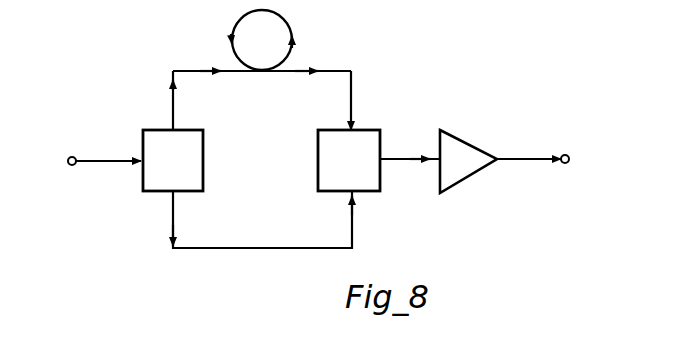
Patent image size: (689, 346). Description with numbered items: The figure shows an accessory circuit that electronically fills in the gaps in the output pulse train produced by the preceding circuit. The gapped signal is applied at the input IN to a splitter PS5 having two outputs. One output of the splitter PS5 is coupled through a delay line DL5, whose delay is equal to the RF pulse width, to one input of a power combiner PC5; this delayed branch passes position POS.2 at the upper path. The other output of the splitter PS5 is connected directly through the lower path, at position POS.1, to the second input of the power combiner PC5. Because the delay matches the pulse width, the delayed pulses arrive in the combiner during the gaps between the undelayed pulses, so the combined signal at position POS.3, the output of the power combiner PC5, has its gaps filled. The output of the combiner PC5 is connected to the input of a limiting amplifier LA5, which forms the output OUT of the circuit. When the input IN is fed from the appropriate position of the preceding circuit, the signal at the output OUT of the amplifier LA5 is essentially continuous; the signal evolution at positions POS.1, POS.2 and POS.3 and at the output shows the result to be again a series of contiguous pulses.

The input IN is at (88, 161).
The splitter PS5 is at (173, 160).
The delay line DL5 is at (311, 20).
The position 1 POS.1 is at (250, 253).
The position 2 POS.2 is at (351, 70).
The position 3 POS.3 is at (402, 156).
The power combiner PC5 is at (349, 160).
The limiting amplifier LA5 is at (476, 148).
The output OUT is at (554, 160).